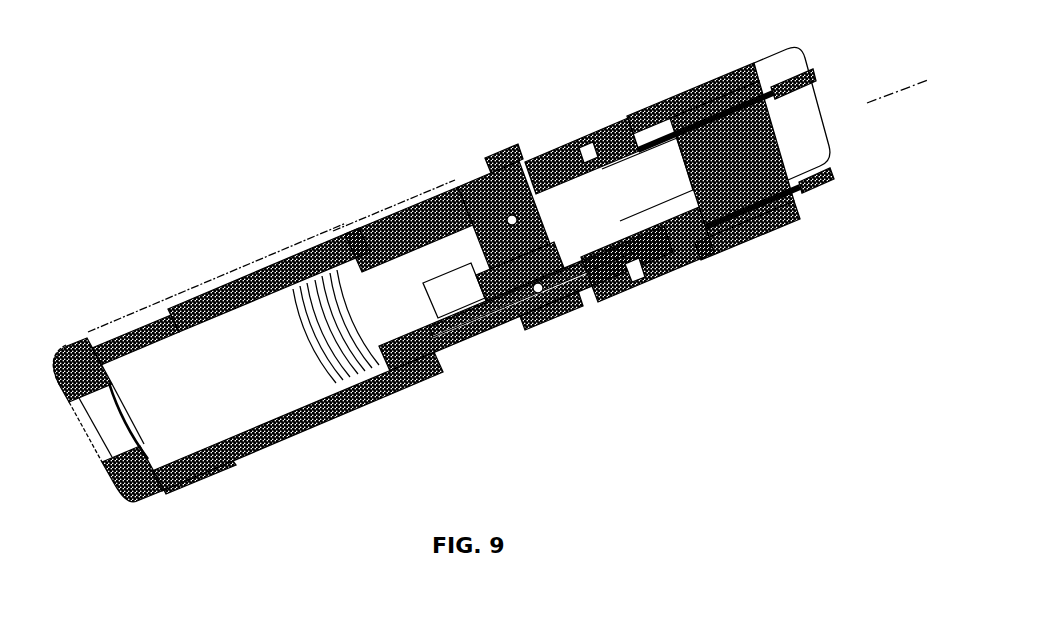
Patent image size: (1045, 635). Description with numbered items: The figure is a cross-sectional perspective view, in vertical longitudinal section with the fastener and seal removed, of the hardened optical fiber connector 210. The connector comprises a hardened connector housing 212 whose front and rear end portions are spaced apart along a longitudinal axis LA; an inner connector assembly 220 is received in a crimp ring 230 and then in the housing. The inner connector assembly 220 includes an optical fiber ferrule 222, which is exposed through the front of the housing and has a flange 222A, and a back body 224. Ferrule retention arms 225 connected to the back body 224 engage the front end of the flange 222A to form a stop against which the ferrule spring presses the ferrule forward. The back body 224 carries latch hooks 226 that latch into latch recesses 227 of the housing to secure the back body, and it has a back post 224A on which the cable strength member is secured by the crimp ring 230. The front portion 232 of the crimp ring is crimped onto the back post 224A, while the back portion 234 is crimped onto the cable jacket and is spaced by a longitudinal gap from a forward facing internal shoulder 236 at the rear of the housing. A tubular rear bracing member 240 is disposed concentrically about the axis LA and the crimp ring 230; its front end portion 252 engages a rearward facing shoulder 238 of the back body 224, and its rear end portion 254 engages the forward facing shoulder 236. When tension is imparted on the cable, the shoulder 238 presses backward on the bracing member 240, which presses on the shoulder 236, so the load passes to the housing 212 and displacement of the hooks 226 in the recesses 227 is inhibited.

The hardened optical fiber connector 210 is at (323, 188).
The hardened connector housing 212 is at (165, 302).
The inner connector assembly 220 is at (665, 138).
The optical fiber ferrule 222 is at (765, 146).
The flange 222A is at (718, 228).
The back body 224 is at (490, 198).
The back post 224A is at (432, 250).
The ferrule retention arms 225 is at (632, 198).
The latch hooks 226 is at (582, 161).
The latch recesses 227 is at (595, 164).
The crimp ring 230 is at (428, 348).
The front portion of crimp ring 232 is at (450, 236).
The back portion of crimp ring 234 is at (312, 285).
The forward facing internal shoulder 236 is at (126, 390).
The rearward facing shoulder 238 is at (536, 297).
The rear bracing member 240 is at (258, 430).
The front end portion of bracing member 252 is at (490, 312).
The rear end portion of bracing member 254 is at (120, 378).
The longitudinal axis LA is at (898, 92).